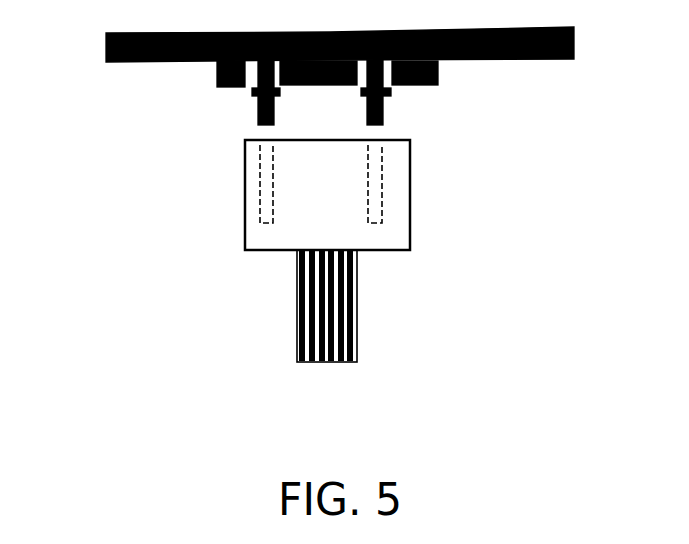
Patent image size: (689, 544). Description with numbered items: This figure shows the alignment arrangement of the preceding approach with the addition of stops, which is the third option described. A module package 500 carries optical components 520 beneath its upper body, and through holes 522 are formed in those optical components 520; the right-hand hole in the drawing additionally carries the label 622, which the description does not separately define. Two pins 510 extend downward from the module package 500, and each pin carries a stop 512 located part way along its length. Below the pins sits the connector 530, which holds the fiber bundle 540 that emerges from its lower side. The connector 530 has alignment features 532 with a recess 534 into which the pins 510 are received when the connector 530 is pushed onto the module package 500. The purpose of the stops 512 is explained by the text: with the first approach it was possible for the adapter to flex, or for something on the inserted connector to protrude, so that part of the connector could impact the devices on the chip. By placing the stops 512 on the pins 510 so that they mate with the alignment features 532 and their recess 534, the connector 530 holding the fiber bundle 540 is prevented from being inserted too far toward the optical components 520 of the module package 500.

The module package 500 is at (592, 73).
The pins 510 is at (365, 110).
The stops 512 is at (252, 93).
The optical components 520 is at (200, 100).
The through holes 522 is at (248, 79).
The electrical contact pad 622 is at (406, 92).
The connector 530 is at (431, 225).
The alignment features 532 is at (240, 203).
The recess 534 is at (250, 149).
The fiber bundle 540 is at (380, 312).